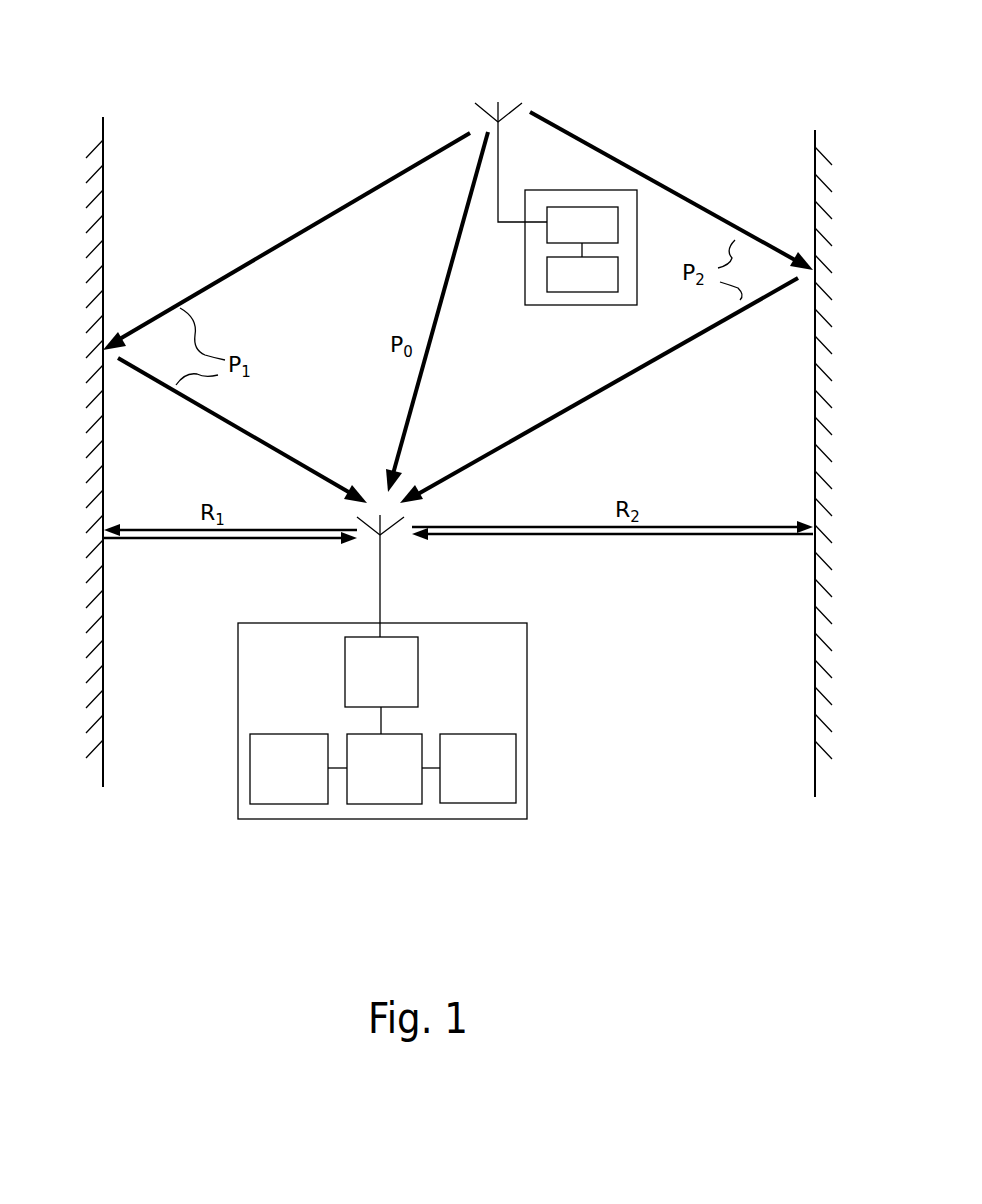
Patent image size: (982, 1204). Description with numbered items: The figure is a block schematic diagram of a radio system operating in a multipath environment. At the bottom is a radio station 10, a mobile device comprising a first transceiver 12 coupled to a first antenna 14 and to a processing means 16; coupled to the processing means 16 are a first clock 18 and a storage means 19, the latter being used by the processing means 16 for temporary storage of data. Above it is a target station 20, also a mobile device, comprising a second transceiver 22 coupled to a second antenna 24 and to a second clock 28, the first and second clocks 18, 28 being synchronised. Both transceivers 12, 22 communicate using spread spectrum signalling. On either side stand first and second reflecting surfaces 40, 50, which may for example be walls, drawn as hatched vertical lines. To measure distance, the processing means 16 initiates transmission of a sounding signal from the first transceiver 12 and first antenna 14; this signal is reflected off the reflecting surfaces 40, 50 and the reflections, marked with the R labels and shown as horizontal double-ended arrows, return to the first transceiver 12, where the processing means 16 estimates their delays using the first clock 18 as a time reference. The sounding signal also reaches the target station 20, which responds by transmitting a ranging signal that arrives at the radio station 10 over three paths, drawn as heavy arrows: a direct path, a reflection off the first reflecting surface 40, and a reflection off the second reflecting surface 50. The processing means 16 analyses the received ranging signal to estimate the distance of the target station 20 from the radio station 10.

The radio station 10 is at (527, 637).
The first transceiver 12 is at (345, 660).
The first antenna 14 is at (380, 573).
The processing means 16 is at (387, 804).
The first clock 18 is at (527, 768).
The storage means 19 is at (288, 804).
The target station 20 is at (540, 305).
The second transceiver 22 is at (585, 207).
The second antenna 24 is at (477, 105).
The second clock 28 is at (573, 292).
The first reflecting surface 40 is at (103, 128).
The second reflecting surface 50 is at (815, 155).